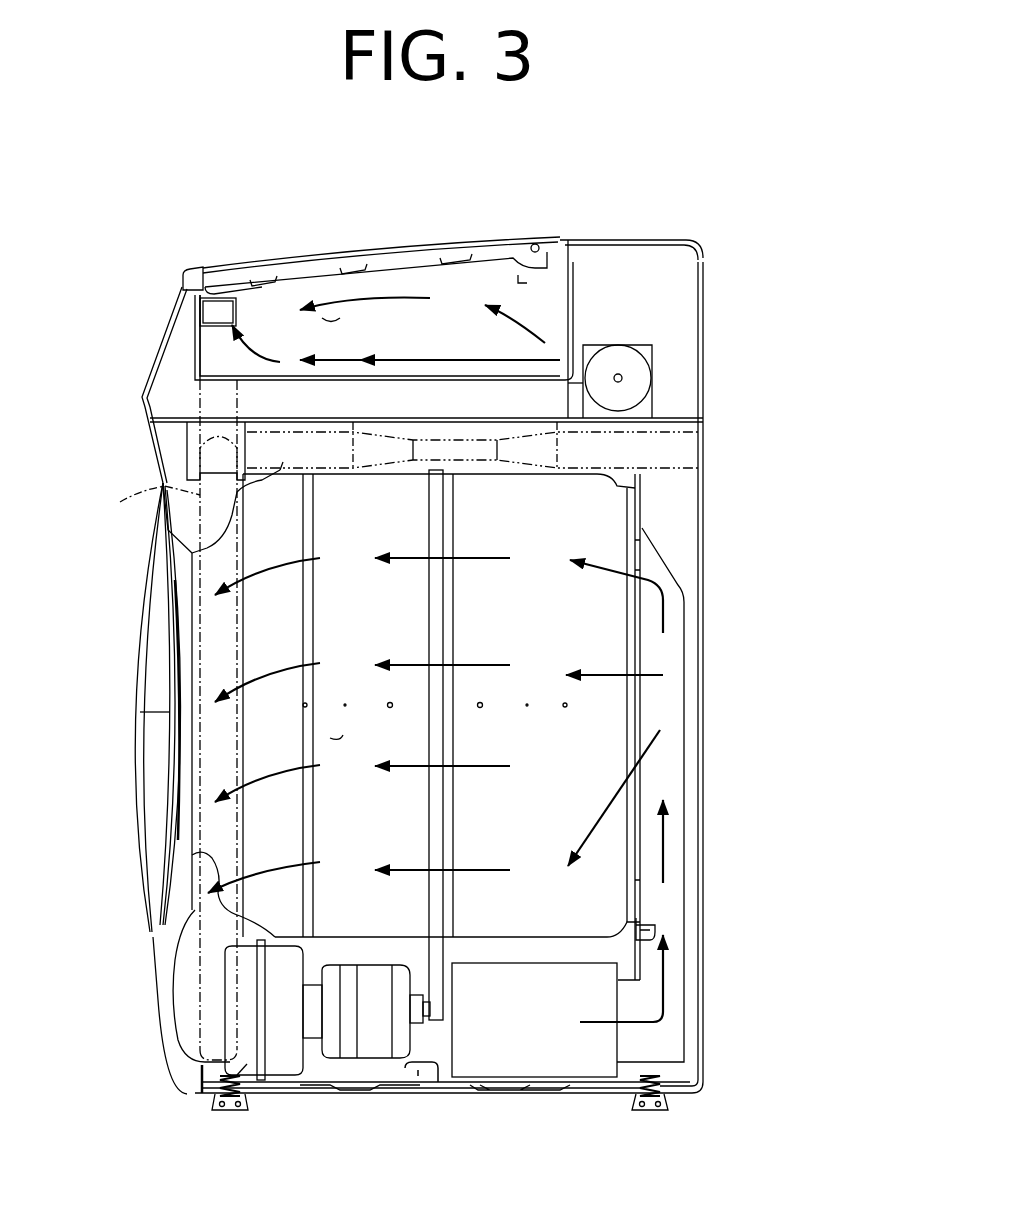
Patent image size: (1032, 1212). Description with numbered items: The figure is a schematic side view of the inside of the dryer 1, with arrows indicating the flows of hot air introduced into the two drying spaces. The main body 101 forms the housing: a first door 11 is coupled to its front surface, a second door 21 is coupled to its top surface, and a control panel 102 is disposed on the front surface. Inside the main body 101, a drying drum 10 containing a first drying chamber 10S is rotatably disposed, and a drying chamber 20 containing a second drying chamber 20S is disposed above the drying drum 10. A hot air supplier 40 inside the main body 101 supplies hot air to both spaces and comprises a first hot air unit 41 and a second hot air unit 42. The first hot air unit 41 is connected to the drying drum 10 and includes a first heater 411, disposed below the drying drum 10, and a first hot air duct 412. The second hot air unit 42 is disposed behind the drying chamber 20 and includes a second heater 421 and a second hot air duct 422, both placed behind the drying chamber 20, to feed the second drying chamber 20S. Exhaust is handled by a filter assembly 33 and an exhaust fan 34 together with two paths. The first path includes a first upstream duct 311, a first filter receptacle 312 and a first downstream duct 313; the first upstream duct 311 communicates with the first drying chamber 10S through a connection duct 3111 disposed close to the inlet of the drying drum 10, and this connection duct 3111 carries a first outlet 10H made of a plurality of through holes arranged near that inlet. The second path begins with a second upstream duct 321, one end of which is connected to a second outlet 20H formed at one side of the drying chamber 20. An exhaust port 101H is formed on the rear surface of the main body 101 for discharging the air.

The dryer 1 is at (427, 133).
The main body 101 is at (652, 238).
The control panel 102 is at (170, 318).
The second door 21 is at (385, 247).
The drying chamber 20 is at (565, 270).
The second outlet 20H is at (218, 300).
The second drying chamber 20S is at (331, 315).
The exhaust port 101H is at (703, 448).
The filter assembly 33 is at (140, 423).
The first filter receptacle 312 is at (190, 448).
The first upstream duct 311 is at (200, 493).
The first downstream duct 313 is at (283, 462).
The second upstream duct 321 is at (197, 397).
The first door 11 is at (148, 632).
The drying drum 10 is at (388, 937).
The first drying chamber 10S is at (330, 738).
The first outlet 10H is at (225, 857).
The exhaust fan 34 is at (341, 1048).
The connection duct 3111 is at (245, 1065).
The hot air supplier 40 is at (826, 358).
The first hot air unit 41 is at (775, 912).
The first heater 411 is at (605, 1003).
The first hot air duct 412 is at (686, 630).
The second hot air unit 42 is at (786, 328).
The second heater 421 is at (638, 368).
The second hot air duct 422 is at (585, 345).